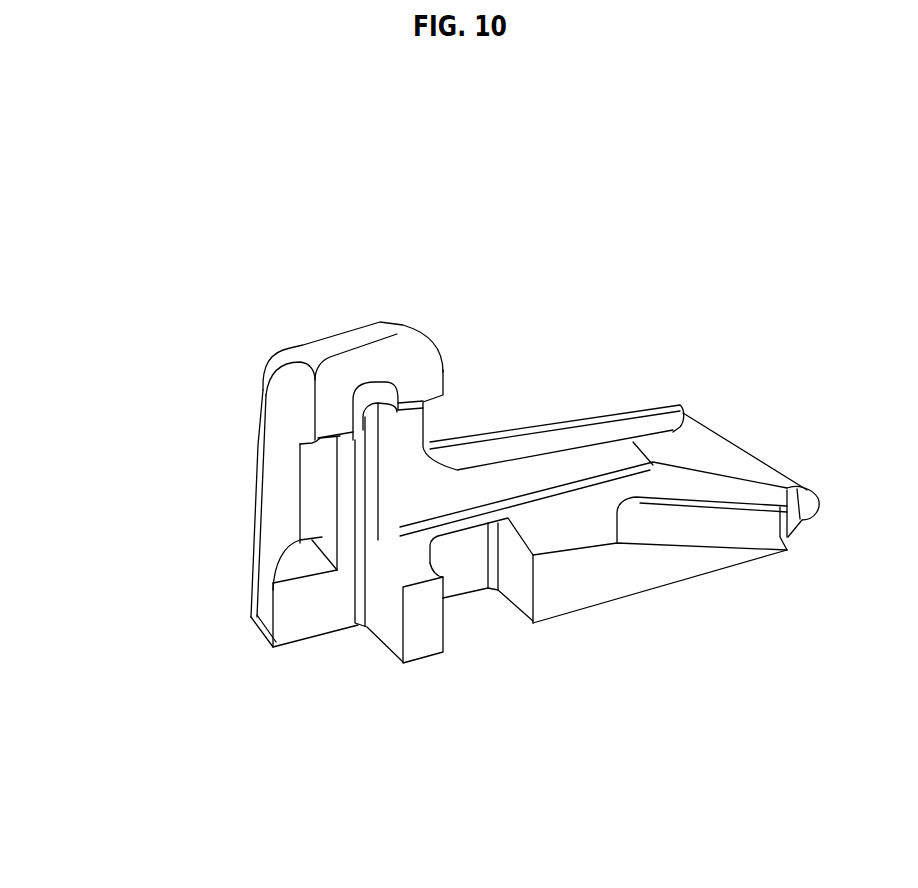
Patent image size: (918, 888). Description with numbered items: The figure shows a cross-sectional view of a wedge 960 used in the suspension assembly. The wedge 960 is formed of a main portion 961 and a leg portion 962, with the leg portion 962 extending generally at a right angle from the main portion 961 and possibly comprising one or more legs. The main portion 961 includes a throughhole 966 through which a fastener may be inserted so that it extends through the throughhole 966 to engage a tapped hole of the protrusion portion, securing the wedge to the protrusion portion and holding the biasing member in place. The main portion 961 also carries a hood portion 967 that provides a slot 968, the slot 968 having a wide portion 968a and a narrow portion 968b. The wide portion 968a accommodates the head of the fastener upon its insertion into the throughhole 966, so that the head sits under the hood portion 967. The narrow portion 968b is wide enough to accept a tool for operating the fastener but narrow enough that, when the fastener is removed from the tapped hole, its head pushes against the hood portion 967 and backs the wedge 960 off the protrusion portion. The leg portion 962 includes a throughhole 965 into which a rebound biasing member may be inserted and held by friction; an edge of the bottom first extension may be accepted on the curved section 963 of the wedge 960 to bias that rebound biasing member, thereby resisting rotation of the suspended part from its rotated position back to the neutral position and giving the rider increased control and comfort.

The wedge 960 is at (263, 260).
The main portion 961 is at (447, 374).
The leg portion 962 is at (608, 577).
The curved section 963 is at (720, 527).
The throughhole 965 is at (520, 583).
The throughhole 966 is at (393, 538).
The hood portion 967 is at (300, 415).
The slot 968 is at (260, 524).
The wide portion 968a is at (273, 597).
The narrow portion 968b is at (297, 493).